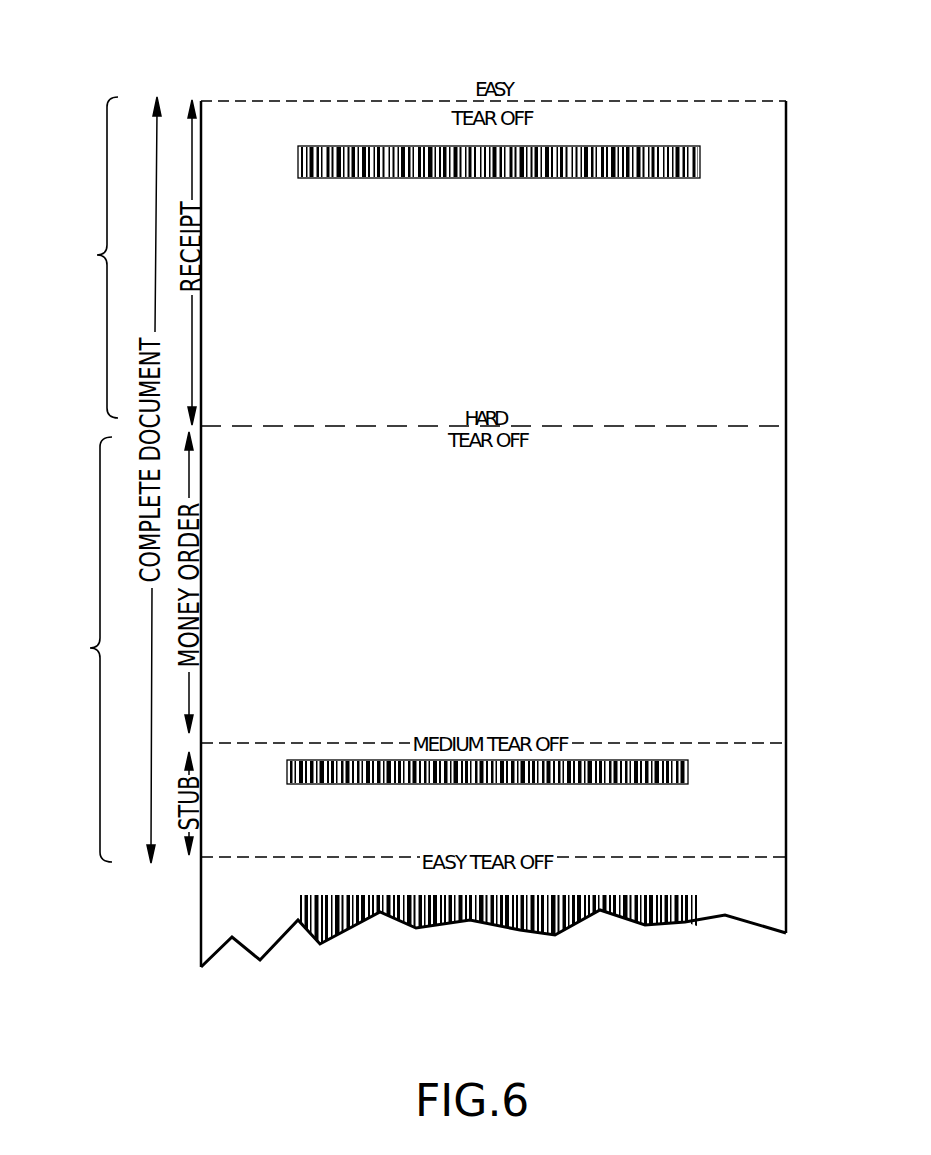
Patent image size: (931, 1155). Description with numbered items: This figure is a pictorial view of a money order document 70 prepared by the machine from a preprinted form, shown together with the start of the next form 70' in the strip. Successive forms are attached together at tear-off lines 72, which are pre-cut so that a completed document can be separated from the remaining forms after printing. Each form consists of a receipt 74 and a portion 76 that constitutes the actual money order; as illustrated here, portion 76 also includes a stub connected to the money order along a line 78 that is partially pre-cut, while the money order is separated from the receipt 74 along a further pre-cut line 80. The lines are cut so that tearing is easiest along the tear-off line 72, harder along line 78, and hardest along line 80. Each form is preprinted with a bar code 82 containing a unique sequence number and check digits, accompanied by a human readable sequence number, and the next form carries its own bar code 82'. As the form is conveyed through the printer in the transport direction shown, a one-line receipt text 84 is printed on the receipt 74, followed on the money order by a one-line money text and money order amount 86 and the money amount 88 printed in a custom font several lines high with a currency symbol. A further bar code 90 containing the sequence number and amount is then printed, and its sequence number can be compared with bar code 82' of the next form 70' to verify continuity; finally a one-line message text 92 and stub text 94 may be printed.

The document form 70 is at (541, 495).
The next form 70' is at (525, 966).
The tear-off line 72 is at (688, 101).
The receipt 74 is at (97, 255).
The money order portion 76 is at (90, 648).
The line 78 is at (262, 741).
The line 80 is at (344, 424).
The bar code 82 is at (581, 169).
The bar code 82' is at (518, 957).
The receipt text 84 is at (665, 283).
The money order text and amount 86 is at (695, 493).
The money amount 88 is at (590, 567).
The bar code 90 is at (693, 748).
The message text 92 is at (659, 800).
The stub text 94 is at (659, 832).